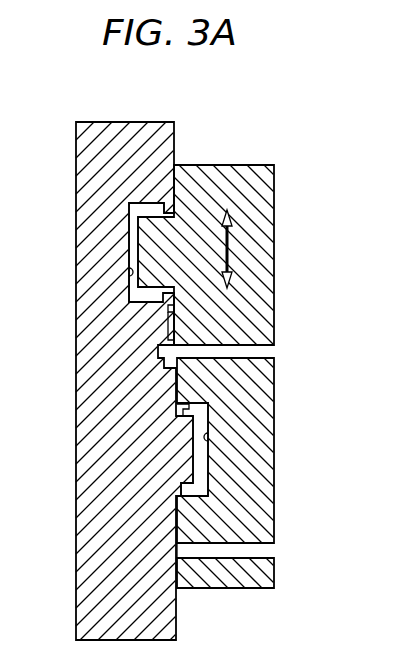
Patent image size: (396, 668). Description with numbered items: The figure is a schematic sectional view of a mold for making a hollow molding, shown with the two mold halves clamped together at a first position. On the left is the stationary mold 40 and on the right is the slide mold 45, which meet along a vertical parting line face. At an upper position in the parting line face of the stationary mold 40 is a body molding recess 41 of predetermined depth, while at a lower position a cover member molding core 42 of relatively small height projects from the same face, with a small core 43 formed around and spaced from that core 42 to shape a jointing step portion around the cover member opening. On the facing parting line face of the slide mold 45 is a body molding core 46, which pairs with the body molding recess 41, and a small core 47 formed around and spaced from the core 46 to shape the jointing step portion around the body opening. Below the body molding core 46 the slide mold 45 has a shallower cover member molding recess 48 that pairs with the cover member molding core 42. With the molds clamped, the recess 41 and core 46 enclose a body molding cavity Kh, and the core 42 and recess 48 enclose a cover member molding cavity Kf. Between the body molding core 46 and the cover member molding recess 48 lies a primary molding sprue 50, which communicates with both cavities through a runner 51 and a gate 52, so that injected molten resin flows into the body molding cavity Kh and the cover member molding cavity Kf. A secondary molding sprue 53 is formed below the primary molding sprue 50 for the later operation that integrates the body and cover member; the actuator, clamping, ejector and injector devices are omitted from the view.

The stationary mold 40 is at (135, 122).
The body molding recess 41 is at (129, 279).
The cover member molding core 42 is at (187, 445).
The small core 43 is at (183, 417).
The slide mold 45 is at (215, 165).
The body molding core 46 is at (140, 243).
The small core 47 is at (174, 206).
The cover member molding recess 48 is at (203, 438).
The primary molding sprue 50 is at (236, 350).
The runner 51 is at (178, 318).
The gate 52 is at (170, 310).
The secondary molding sprue 53 is at (222, 548).
The body molding cavity Kh is at (130, 231).
The cover member molding cavity Kf is at (200, 459).